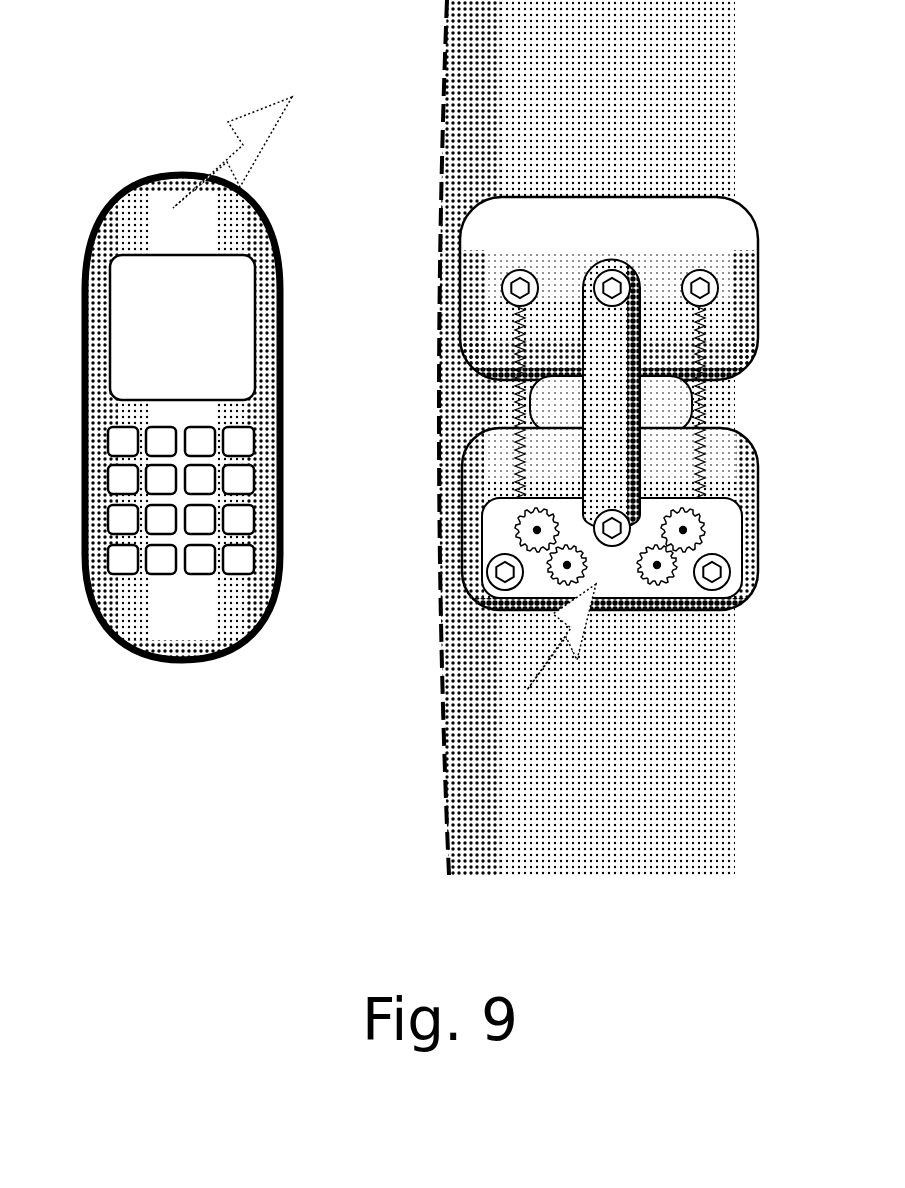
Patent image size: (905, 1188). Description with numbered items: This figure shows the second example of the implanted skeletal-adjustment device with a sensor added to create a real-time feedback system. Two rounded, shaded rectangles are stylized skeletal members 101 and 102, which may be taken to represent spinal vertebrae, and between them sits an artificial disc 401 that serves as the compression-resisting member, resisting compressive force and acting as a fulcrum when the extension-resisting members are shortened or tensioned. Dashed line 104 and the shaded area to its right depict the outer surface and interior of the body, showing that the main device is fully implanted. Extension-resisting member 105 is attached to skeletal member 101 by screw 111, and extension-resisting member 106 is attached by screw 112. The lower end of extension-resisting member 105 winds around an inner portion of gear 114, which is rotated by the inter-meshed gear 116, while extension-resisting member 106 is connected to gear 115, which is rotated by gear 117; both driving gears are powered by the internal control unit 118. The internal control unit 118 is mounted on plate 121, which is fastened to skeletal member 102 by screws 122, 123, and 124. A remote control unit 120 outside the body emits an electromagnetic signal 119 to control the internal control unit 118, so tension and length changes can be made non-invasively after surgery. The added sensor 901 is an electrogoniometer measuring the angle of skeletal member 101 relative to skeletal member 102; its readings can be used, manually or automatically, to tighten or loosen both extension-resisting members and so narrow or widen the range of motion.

The skeletal member 101 is at (480, 288).
The skeletal member 102 is at (473, 507).
The dashed line 104 is at (436, 80).
The extension-resisting member 105 is at (515, 485).
The extension-resisting member 106 is at (705, 482).
The screw 111 is at (514, 282).
The screw 112 is at (701, 287).
The gear 114 is at (522, 532).
The gear 115 is at (697, 535).
The gear 116 is at (497, 612).
The gear 117 is at (675, 590).
The internal control unit 118 is at (615, 592).
The electromagnetic signal 119 is at (222, 143).
The remote control unit 120 is at (128, 215).
The plate 121 is at (724, 520).
The screw 122 is at (550, 572).
The screw 123 is at (612, 532).
The screw 124 is at (714, 575).
The artificial disc 401 is at (670, 402).
The sensor 901 is at (612, 455).